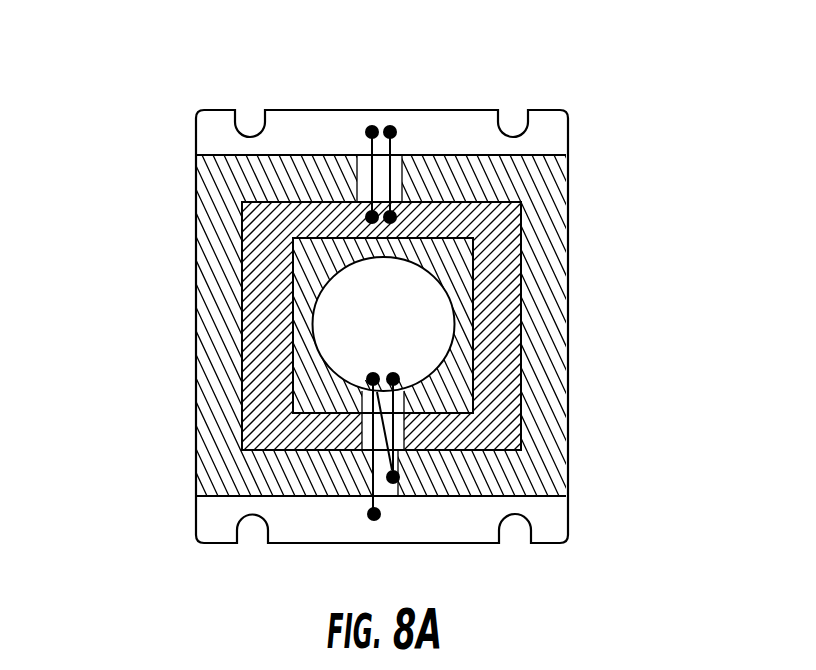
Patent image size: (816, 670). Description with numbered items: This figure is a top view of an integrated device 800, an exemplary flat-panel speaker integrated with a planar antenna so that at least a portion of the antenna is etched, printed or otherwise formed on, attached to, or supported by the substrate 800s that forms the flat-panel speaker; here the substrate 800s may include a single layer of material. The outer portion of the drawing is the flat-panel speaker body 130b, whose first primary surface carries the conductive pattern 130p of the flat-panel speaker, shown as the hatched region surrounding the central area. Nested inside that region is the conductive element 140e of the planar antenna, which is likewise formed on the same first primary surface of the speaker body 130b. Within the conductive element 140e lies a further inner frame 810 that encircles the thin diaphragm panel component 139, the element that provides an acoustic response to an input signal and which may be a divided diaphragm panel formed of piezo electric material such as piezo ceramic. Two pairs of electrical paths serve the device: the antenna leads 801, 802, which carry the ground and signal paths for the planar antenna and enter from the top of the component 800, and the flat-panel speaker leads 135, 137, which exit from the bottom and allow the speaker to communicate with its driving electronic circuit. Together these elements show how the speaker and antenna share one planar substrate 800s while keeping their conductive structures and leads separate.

The integrated device 800 is at (381, 319).
The substrate 800s is at (197, 497).
The flat-panel speaker body 130b is at (568, 123).
The conductive pattern 130p is at (218, 397).
The conductive element 140e is at (268, 312).
The inner frame 810 is at (507, 368).
The diaphragm panel component 139 is at (420, 292).
The antenna lead 801 is at (370, 150).
The antenna lead 802 is at (395, 150).
The flat-panel speaker lead 135 is at (373, 488).
The flat-panel speaker lead 137 is at (395, 462).